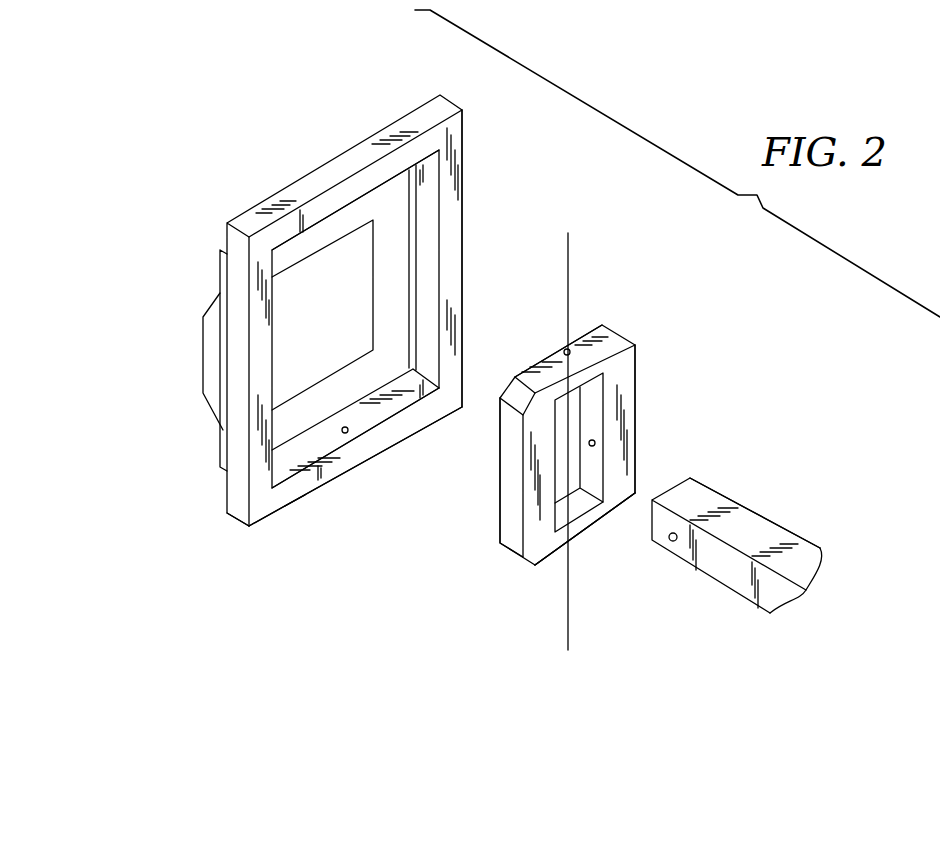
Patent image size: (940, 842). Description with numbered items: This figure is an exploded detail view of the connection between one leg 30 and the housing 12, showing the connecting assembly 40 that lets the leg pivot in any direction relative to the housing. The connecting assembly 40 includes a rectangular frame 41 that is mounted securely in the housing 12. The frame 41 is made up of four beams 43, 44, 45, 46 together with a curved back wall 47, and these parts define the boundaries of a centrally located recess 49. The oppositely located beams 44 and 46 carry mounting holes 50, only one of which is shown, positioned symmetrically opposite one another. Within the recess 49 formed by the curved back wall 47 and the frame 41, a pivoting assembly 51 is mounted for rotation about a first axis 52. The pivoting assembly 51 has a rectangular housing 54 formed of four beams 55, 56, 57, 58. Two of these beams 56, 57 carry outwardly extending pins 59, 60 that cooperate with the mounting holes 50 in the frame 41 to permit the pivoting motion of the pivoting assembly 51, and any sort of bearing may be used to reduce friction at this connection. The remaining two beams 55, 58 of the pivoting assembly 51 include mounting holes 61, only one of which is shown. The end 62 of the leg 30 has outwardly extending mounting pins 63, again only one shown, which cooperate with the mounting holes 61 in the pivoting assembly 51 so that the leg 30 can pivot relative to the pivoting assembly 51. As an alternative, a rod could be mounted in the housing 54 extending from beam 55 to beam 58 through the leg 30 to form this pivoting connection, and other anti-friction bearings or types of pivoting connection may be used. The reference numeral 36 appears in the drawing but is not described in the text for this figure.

The housing 12 is at (235, 522).
The leg 30 is at (768, 622).
The frame 36 is at (357, 143).
The connecting assembly 40 is at (295, 503).
The rectangular frame 41 is at (390, 447).
The beam 43 is at (463, 248).
The beam 44 is at (370, 460).
The beam 45 is at (222, 432).
The beam 46 is at (325, 170).
The curved back wall 47 is at (203, 352).
The recess 49 is at (356, 342).
The mounting holes 50 is at (346, 434).
The pivoting assembly 51 is at (637, 344).
The first axis 52 is at (569, 458).
The rectangular housing 54 is at (635, 370).
The beam 55 is at (635, 393).
The beam 56 is at (588, 332).
The beam 57 is at (600, 527).
The beam 58 is at (508, 527).
The pin 59 is at (568, 547).
The pin 60 is at (562, 352).
The mounting holes 61 is at (595, 442).
The end of leg 62 is at (682, 480).
The mounting pins 63 is at (668, 542).